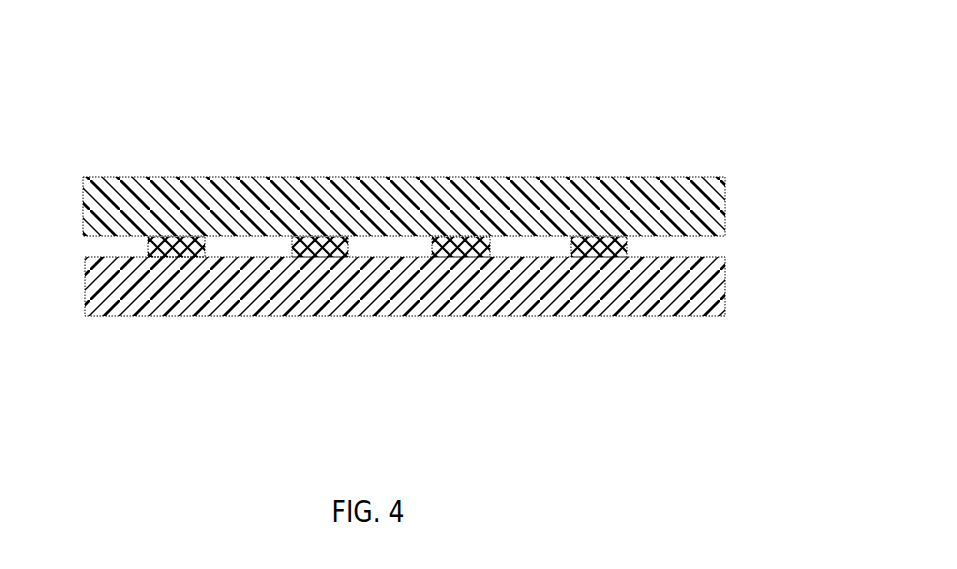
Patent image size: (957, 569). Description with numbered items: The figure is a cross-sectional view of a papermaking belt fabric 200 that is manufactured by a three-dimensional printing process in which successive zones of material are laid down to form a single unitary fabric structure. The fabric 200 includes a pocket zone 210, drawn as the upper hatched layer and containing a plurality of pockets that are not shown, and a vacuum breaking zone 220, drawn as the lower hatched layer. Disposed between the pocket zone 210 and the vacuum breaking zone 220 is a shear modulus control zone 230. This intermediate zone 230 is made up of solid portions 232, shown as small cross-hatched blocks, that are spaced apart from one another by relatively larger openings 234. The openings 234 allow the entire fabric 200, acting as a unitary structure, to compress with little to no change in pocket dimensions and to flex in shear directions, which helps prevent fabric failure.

The fabric 200 is at (316, 162).
The pocket zone 210 is at (703, 212).
The vacuum breaking zone 220 is at (702, 297).
The shear modulus control zone 230 is at (161, 222).
The solid portions 232 is at (187, 243).
The openings 234 is at (247, 245).